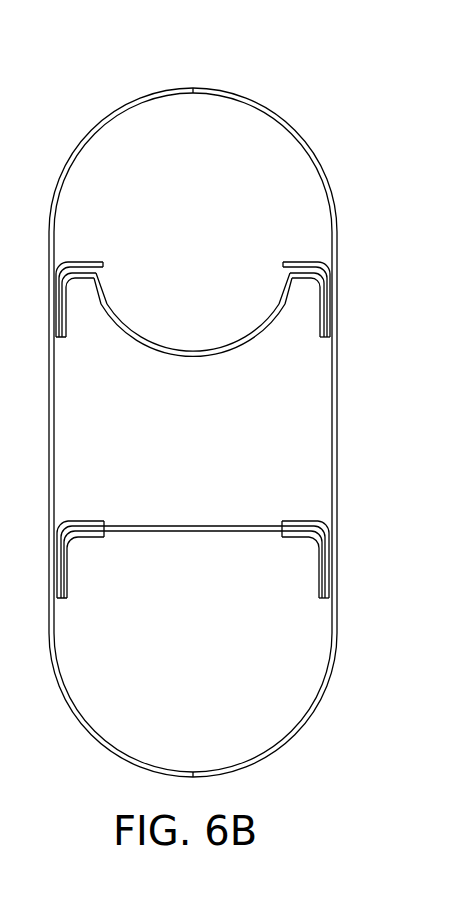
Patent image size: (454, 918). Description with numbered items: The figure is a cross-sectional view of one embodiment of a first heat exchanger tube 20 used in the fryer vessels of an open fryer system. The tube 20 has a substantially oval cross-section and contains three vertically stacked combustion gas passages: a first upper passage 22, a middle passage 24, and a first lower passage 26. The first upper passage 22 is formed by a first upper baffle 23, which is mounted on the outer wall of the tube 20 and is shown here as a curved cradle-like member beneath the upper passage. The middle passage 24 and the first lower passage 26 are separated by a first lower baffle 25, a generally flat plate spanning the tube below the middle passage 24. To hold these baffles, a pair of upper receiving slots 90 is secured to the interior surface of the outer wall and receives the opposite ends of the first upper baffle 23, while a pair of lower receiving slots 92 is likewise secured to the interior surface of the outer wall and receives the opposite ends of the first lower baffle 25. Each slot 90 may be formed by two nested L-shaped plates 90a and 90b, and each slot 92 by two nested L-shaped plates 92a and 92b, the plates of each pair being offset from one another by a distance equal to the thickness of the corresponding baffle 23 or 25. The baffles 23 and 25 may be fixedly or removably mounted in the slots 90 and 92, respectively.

The first heat exchanger tube 20 is at (270, 104).
The first upper passage 22 is at (223, 206).
The first upper baffle 23 is at (253, 338).
The middle passage 24 is at (226, 434).
The first lower baffle 25 is at (231, 526).
The first lower passage 26 is at (218, 647).
The upper receiving slot 90 is at (88, 262).
The L-shaped plate 90a is at (330, 275).
The L-shaped plate 90b is at (330, 313).
The lower receiving slot 92 is at (80, 521).
The L-shaped plate 92a is at (330, 530).
The L-shaped plate 92b is at (325, 580).